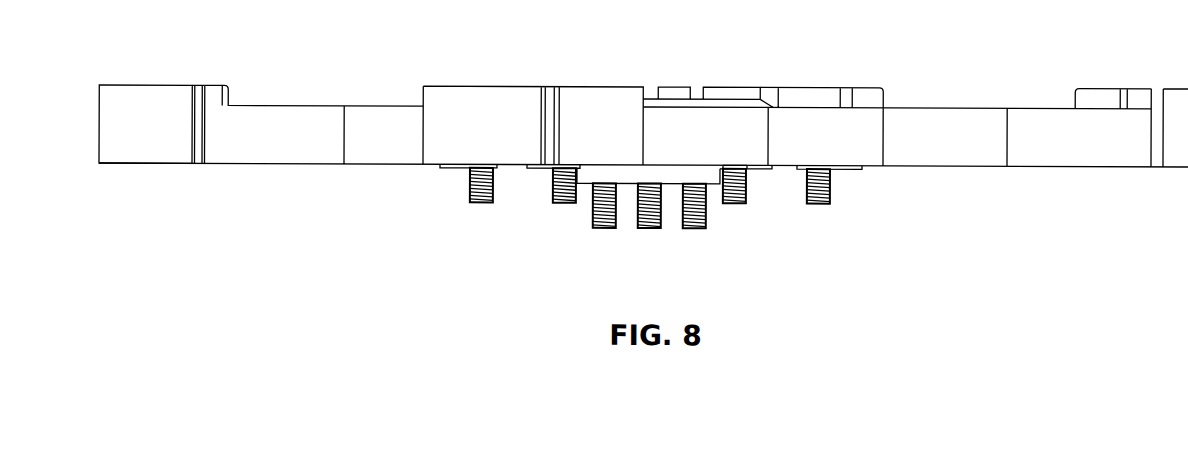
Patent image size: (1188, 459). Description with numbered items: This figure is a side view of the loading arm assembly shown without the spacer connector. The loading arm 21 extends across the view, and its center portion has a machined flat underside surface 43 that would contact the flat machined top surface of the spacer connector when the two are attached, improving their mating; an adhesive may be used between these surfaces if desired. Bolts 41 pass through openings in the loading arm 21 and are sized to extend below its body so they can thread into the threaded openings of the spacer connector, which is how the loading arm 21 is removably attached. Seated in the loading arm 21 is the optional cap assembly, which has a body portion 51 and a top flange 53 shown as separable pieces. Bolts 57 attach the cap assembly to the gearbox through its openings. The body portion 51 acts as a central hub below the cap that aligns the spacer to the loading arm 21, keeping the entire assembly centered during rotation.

The loading arm 21 is at (958, 105).
The bolts 41 is at (830, 185).
The underside surface 43 is at (787, 162).
The body portion 51 is at (590, 171).
The top flange 53 is at (653, 91).
The bolts 57 is at (707, 208).